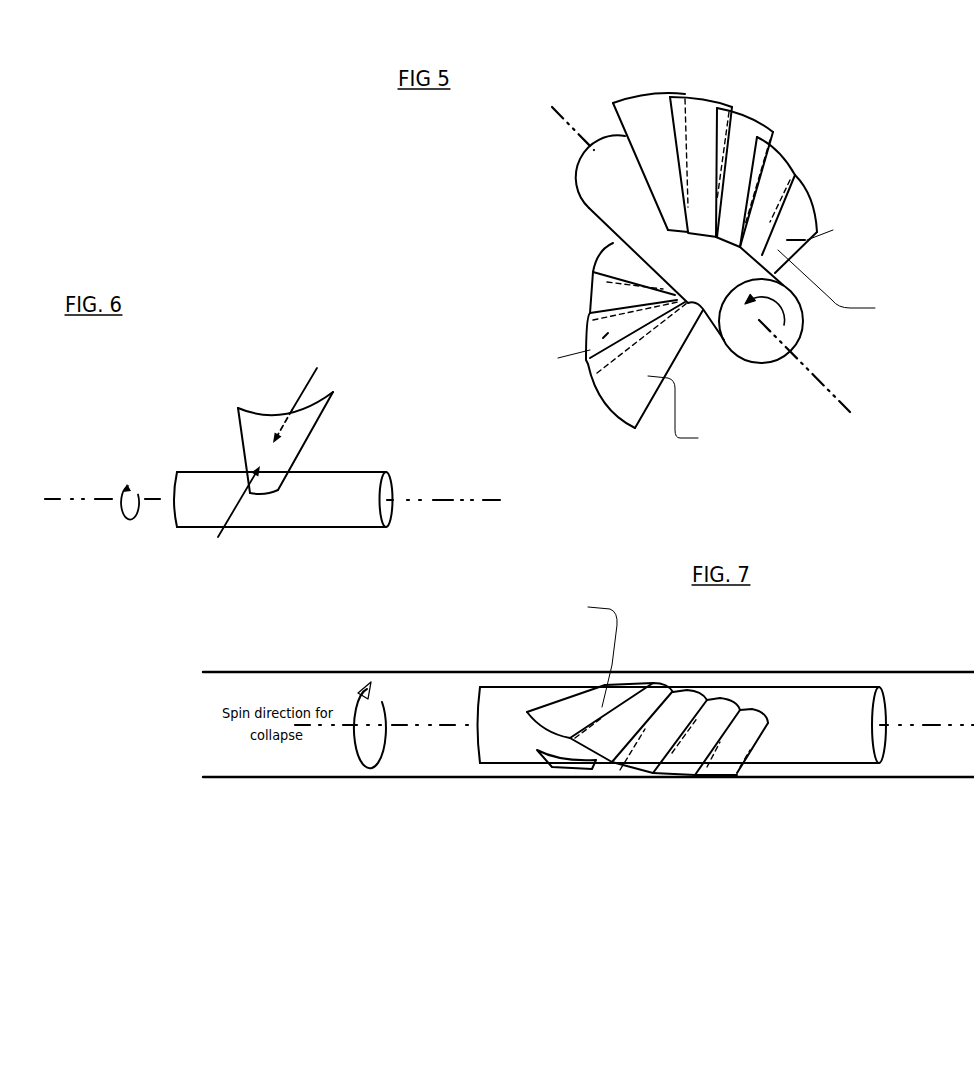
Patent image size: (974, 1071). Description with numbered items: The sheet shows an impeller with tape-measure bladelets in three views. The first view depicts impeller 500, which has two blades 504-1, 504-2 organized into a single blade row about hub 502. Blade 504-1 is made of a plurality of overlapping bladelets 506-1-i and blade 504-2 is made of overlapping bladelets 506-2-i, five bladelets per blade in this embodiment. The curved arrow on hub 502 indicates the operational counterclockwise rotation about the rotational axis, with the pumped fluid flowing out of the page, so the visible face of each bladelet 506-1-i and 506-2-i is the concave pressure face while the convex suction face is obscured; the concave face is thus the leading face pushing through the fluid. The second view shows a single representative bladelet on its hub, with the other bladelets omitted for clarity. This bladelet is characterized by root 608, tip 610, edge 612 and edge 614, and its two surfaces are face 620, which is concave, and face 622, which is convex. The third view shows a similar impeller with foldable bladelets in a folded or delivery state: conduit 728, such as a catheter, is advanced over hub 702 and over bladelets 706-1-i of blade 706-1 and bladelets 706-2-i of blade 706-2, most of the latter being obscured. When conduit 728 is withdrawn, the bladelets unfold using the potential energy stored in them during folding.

In FIG. 5, the impeller 500 is at (527, 198).
In FIG. 5, the hub 502 is at (713, 273).
In FIG. 5, the blade 504-1 is at (787, 105).
In FIG. 5, the blade 504-2 is at (548, 290).
In FIG. 5, the bladelets 506-1-i is at (776, 172).
In FIG. 5, the bladelets 506-2-i is at (602, 297).
In FIG. 6, the root 608 is at (274, 494).
In FIG. 6, the tip 610 is at (258, 407).
In FIG. 6, the edge 612 is at (241, 443).
In FIG. 6, the edge 614 is at (304, 452).
In FIG. 6, the face 620 is at (308, 391).
In FIG. 6, the face 622 is at (226, 514).
In FIG. 7, the hub 702 is at (843, 735).
In FIG. 7, the blade 706-1 is at (545, 690).
In FIG. 7, the blade 706-2 is at (540, 784).
In FIG. 7, the bladelets 706-1-i is at (615, 722).
In FIG. 7, the bladelets 706-2-i is at (555, 768).
In FIG. 7, the conduit 728 is at (855, 670).